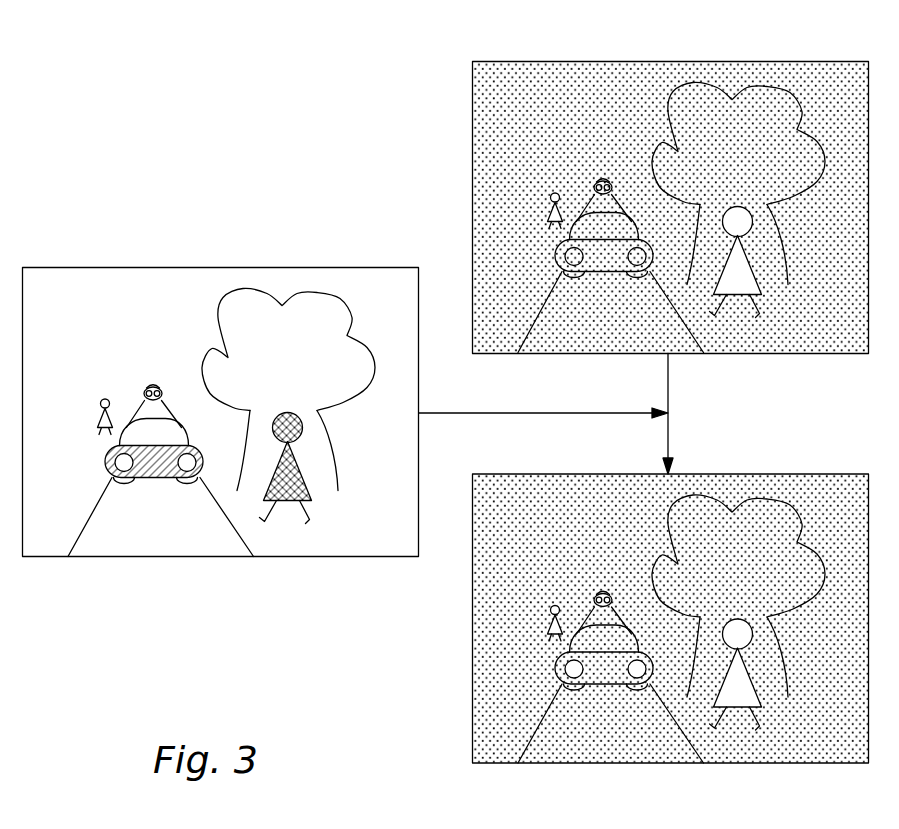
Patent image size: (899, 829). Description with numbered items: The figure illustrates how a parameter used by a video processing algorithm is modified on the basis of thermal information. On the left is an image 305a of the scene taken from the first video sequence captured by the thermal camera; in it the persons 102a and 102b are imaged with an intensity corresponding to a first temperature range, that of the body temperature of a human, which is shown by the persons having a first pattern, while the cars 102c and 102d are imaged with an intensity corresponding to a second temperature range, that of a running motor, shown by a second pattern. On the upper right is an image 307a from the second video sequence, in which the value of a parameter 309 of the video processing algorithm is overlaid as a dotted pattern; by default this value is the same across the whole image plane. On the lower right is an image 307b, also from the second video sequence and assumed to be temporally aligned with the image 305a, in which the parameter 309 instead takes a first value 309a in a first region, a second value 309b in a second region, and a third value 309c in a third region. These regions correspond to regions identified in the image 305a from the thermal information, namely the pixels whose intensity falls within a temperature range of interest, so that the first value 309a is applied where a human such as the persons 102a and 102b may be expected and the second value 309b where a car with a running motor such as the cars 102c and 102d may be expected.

The image 305a is at (245, 267).
The person 102a is at (100, 411).
The person 102b is at (310, 490).
The car 102c is at (152, 386).
The car 102d is at (153, 478).
The image 307a is at (768, 61).
The image 307b is at (767, 474).
The parameter 309 is at (486, 82).
The first value 309a is at (550, 614).
The second value 309b is at (602, 591).
The third value 309c is at (547, 488).